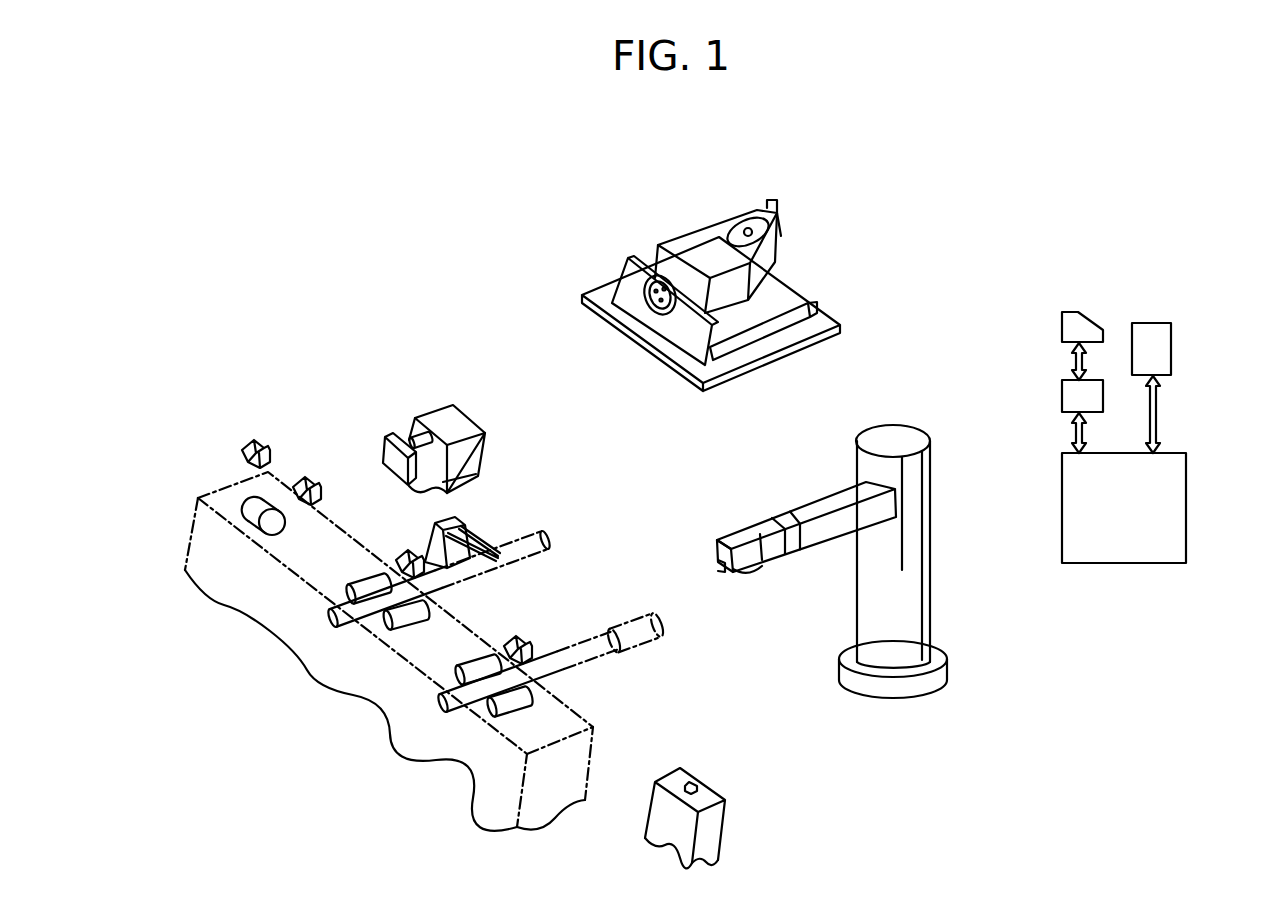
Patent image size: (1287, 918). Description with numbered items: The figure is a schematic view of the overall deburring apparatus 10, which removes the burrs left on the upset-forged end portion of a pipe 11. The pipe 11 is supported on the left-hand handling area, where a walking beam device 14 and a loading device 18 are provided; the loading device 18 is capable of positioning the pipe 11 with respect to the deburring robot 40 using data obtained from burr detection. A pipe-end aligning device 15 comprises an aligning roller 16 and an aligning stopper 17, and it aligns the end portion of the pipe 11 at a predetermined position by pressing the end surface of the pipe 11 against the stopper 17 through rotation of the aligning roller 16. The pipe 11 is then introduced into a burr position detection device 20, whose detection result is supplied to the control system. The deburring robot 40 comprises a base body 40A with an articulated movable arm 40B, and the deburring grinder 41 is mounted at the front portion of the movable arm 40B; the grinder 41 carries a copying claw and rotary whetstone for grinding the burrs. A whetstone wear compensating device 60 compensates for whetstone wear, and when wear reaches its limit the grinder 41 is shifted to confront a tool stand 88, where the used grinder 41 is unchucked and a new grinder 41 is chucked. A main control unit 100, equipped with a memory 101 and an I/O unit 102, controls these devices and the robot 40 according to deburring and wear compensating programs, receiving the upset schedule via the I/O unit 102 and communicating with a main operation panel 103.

The deburring apparatus 10 is at (430, 350).
The pipe 11 is at (630, 647).
The walking beam device 14 is at (244, 441).
The pipe-end aligning device 15 is at (463, 412).
The aligning roller 16 is at (250, 498).
The aligning stopper 17 is at (388, 446).
The loading device 18 is at (502, 718).
The burr position detection device 20 is at (463, 508).
The deburring robot 40 is at (871, 526).
The base body 40A is at (925, 585).
The movable arm 40B is at (815, 497).
The deburring grinder 41 is at (697, 238).
The whetstone wear compensating device 60 is at (712, 842).
The tool stand 88 is at (603, 287).
The main control unit 100 is at (1178, 520).
The memory 101 is at (1171, 355).
The I/O unit 102 is at (1062, 397).
The main operation panel 103 is at (1063, 327).